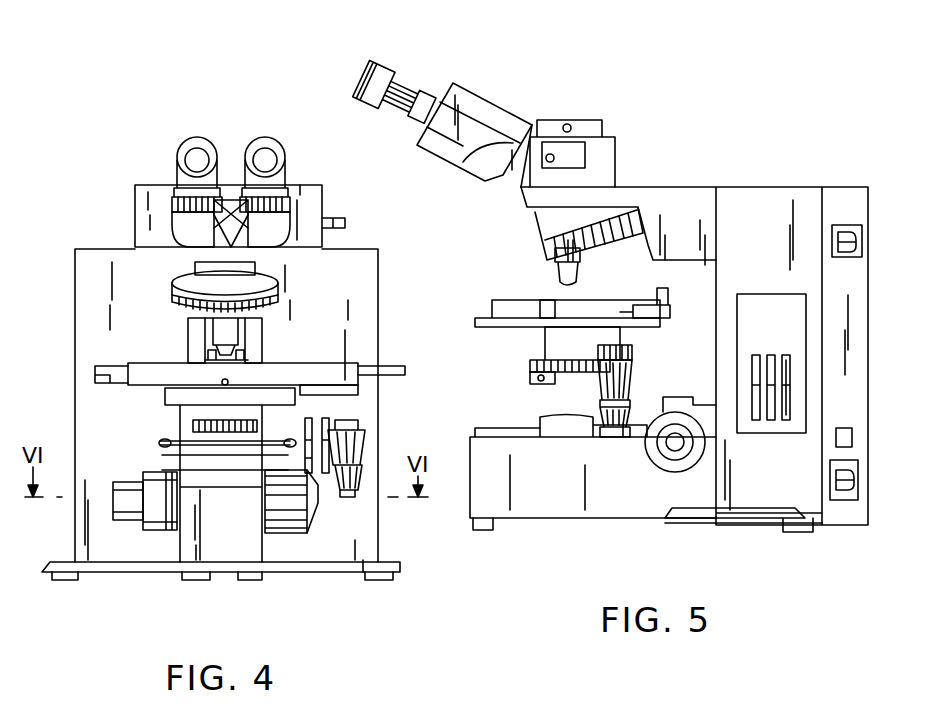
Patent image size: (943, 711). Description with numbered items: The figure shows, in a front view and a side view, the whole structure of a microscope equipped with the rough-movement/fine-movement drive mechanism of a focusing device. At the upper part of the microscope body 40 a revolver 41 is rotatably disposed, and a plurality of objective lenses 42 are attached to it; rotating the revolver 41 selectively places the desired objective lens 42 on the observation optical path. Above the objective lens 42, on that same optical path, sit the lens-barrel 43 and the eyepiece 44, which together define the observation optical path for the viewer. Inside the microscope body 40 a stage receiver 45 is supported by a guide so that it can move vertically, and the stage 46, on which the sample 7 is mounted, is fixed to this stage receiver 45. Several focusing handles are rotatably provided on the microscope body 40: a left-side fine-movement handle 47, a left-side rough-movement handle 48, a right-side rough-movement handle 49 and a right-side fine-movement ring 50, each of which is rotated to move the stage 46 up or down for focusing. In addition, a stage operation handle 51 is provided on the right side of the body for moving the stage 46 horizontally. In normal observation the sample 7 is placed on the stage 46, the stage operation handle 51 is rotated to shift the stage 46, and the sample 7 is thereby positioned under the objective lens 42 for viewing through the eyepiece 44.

In FIG. 4, the sample 7 is at (232, 362).
In FIG. 5, the sample 7 is at (573, 300).
In FIG. 4, the microscope body 40 is at (378, 314).
In FIG. 5, the microscope body 40 is at (687, 190).
In FIG. 4, the revolver 41 is at (185, 283).
In FIG. 5, the revolver 41 is at (538, 230).
In FIG. 4, the objective lens 42 is at (248, 330).
In FIG. 5, the objective lens 42 is at (557, 262).
In FIG. 4, the lens-barrel 43 is at (183, 224).
In FIG. 5, the lens-barrel 43 is at (484, 118).
In FIG. 4, the eyepiece 44 is at (177, 161).
In FIG. 5, the eyepiece 44 is at (398, 78).
In FIG. 5, the stage receiver 45 is at (690, 330).
In FIG. 4, the stage 46 is at (160, 363).
In FIG. 5, the stage 46 is at (500, 318).
In FIG. 4, the left-side fine-movement handle 47 is at (128, 482).
In FIG. 4, the left-side rough-movement handle 48 is at (160, 472).
In FIG. 4, the right-side rough-movement handle 49 is at (299, 536).
In FIG. 4, the right-side fine-movement ring 50 is at (314, 507).
In FIG. 5, the right-side fine-movement ring 50 is at (667, 462).
In FIG. 4, the stage operation handle 51 is at (362, 445).
In FIG. 5, the stage operation handle 51 is at (600, 390).